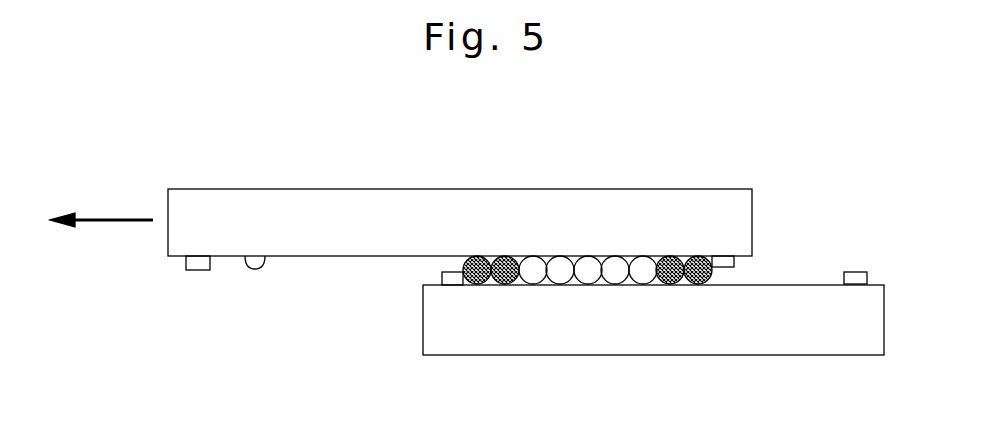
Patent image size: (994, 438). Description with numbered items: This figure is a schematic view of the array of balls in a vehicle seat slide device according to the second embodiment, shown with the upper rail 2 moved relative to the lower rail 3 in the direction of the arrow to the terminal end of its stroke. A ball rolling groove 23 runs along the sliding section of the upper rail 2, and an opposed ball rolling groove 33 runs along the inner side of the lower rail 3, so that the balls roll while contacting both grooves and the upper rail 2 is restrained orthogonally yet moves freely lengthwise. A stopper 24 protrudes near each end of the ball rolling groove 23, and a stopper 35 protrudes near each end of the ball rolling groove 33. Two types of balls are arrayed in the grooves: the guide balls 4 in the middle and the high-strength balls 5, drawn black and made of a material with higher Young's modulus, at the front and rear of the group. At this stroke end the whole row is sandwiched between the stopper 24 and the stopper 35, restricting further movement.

The upper rail 2 is at (334, 200).
The lower rail 3 is at (615, 345).
The guide balls 4 is at (534, 258).
The high-strength balls 5 is at (505, 256).
The ball rolling groove 23 is at (245, 256).
The stopper 24 is at (204, 270).
The ball rolling groove 33 is at (783, 281).
The stopper 35 is at (455, 286).